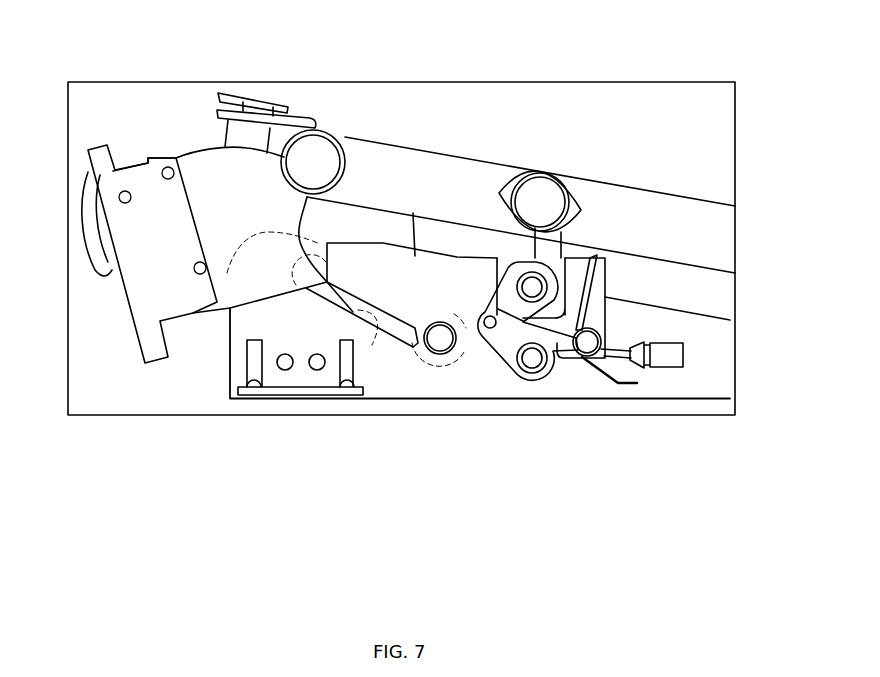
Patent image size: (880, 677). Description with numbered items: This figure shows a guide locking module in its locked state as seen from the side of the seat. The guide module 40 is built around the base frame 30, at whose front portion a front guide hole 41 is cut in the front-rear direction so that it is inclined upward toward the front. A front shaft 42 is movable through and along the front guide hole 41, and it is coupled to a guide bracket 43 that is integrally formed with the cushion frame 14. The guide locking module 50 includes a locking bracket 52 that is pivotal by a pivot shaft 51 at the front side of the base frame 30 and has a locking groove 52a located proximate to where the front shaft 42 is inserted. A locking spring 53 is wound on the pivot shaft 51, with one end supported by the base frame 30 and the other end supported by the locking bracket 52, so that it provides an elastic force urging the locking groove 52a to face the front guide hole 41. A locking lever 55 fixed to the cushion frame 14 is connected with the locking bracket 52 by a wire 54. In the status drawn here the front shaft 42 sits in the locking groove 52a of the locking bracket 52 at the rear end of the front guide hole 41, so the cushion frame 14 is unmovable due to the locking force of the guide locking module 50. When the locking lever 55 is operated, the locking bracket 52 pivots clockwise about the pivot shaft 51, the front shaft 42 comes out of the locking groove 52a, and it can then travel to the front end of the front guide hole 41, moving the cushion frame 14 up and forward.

The cushion frame 14 is at (678, 223).
The base frame 30 is at (497, 385).
The guide module 40 is at (290, 214).
The front guide hole 41 is at (355, 397).
The front shaft 42 is at (438, 343).
The guide bracket 43 is at (357, 227).
The guide locking module 50 is at (565, 247).
The pivot shaft 51 is at (587, 347).
The locking bracket 52 is at (408, 280).
The locking groove 52a is at (438, 338).
The locking spring 53 is at (590, 288).
The wire 54 is at (625, 365).
The locking lever 55 is at (127, 298).